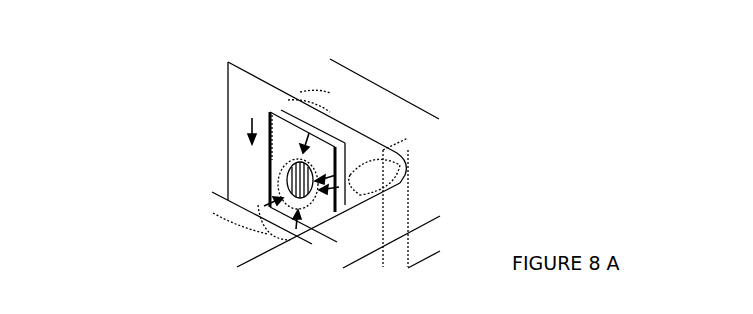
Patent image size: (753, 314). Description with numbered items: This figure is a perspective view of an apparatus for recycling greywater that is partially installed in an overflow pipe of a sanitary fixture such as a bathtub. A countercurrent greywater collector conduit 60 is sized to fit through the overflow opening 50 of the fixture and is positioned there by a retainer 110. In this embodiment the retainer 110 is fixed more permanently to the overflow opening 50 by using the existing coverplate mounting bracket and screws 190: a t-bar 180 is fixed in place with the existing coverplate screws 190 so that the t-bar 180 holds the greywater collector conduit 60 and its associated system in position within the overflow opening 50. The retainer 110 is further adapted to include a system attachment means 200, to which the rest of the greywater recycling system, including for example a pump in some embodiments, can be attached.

The overflow opening 50 is at (318, 100).
The countercurrent greywater collector conduit 60 is at (252, 118).
The retainer 110 is at (213, 213).
The t-bar 180 is at (421, 202).
The coverplate screws 190 is at (387, 208).
The system attachment means 200 is at (228, 168).